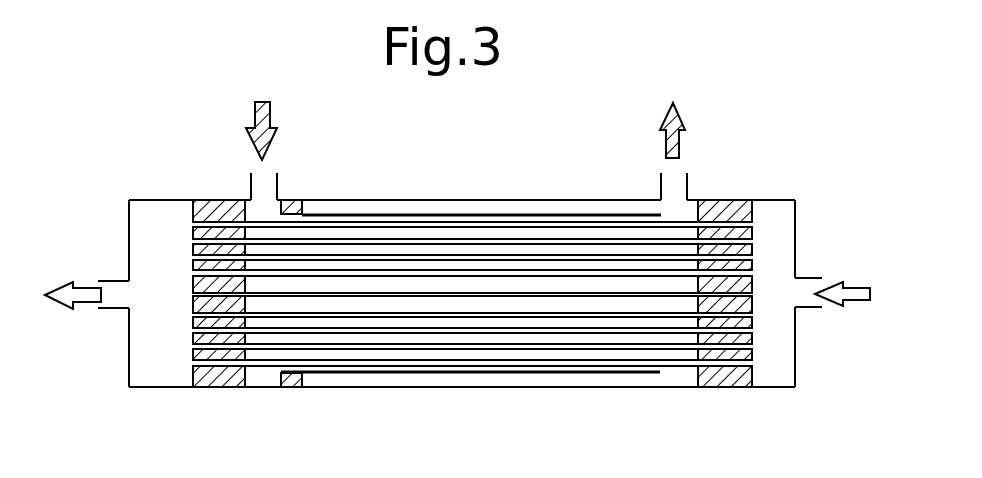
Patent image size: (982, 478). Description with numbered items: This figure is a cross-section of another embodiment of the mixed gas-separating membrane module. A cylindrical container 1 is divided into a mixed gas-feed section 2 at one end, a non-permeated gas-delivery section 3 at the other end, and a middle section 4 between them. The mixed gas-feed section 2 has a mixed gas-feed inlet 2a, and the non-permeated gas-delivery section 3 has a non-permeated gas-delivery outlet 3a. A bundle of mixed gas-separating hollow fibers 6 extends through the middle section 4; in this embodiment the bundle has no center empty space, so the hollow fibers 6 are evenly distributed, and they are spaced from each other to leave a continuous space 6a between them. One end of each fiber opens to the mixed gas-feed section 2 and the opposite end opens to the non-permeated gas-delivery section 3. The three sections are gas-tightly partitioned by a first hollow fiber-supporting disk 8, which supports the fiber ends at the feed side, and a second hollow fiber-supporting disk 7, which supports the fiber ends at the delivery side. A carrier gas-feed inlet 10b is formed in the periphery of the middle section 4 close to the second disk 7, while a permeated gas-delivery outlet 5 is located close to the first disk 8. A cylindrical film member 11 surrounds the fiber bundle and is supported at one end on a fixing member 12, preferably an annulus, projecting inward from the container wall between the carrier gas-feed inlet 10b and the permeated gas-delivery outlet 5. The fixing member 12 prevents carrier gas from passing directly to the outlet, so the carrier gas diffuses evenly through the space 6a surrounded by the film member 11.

The cylindrical container 1 is at (422, 200).
The mixed gas-feed section 2 is at (815, 290).
The mixed gas-feed inlet 2a is at (806, 278).
The non-permeated gas-delivery section 3 is at (111, 284).
The non-permeated gas-delivery outlet 3a is at (112, 281).
The middle section 4 is at (519, 200).
The permeated gas-delivery outlet 5 is at (688, 183).
The mixed gas-separating hollow fibers 6 is at (471, 328).
The continuous space between the hollow fibers 6a is at (600, 322).
The second hollow fiber-supporting disk 7 is at (217, 388).
The first hollow fiber-supporting disk 8 is at (736, 201).
The carrier gas-feed inlet 10b is at (278, 183).
The cylindrical film member 11 is at (457, 375).
The fixing member 12 is at (292, 200).